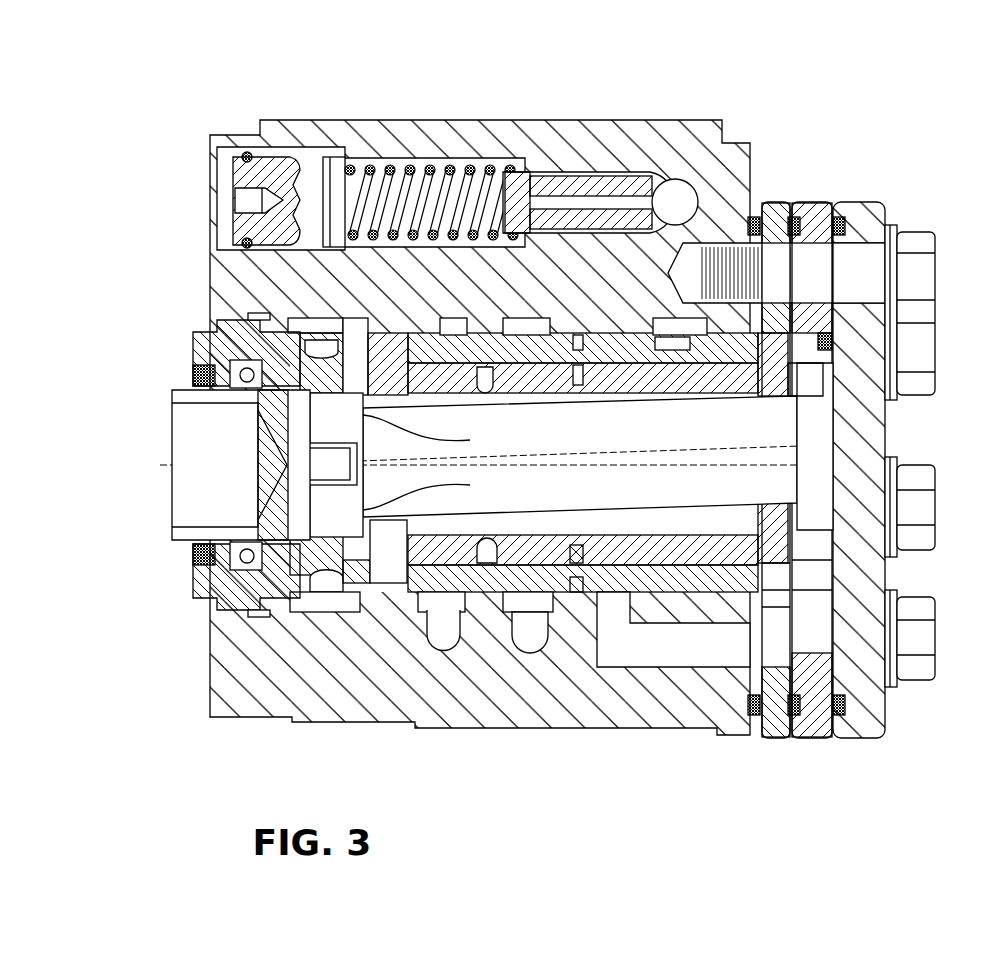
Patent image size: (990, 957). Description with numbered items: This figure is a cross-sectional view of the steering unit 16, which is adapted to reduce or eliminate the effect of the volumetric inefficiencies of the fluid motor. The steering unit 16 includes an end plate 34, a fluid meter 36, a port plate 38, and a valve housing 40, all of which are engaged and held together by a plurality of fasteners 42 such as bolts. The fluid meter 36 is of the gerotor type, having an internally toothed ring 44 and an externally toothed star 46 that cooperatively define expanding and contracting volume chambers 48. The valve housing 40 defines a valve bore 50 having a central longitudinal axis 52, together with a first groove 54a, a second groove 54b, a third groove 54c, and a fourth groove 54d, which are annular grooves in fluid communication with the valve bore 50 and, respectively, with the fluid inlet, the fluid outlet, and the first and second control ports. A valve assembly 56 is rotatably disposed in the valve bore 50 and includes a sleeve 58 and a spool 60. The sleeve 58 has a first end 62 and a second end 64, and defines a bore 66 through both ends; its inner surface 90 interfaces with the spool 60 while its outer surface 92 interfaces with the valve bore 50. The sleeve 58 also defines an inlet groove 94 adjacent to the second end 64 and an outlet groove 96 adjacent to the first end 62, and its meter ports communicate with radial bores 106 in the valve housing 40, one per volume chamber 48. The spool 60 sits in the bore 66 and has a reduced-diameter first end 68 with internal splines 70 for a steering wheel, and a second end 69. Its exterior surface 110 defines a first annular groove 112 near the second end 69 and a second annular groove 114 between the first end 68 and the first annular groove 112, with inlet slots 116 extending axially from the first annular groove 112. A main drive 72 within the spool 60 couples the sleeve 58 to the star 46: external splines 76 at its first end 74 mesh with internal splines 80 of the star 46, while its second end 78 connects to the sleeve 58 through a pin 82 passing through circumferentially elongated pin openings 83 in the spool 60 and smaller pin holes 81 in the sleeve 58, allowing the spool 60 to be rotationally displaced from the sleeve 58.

The steering unit 16 is at (182, 125).
The end plate 34 is at (862, 734).
The fluid meter 36 is at (809, 193).
The port plate 38 is at (770, 734).
The valve housing 40 is at (462, 114).
The fasteners 42 is at (912, 236).
The internally toothed ring 44 is at (810, 734).
The externally toothed star 46 is at (830, 350).
The volume chambers 48 is at (828, 645).
The valve bore 50 is at (500, 562).
The central longitudinal axis 52 is at (752, 466).
The first groove 54a is at (660, 320).
The second groove 54b is at (300, 313).
The third groove 54c is at (445, 318).
The fourth groove 54d is at (572, 320).
The valve assembly 56 is at (766, 332).
The sleeve 58 is at (568, 316).
The spool 60 is at (158, 372).
The first end 62 is at (330, 318).
The second end 64 is at (757, 372).
The bore 66 is at (552, 380).
The first end 68 is at (230, 553).
The second end 69 is at (745, 563).
The internal splines 70 is at (195, 517).
The main drive 72 is at (646, 441).
The first end 74 is at (830, 457).
The external splines 76 is at (845, 435).
The second end 78 is at (433, 618).
The internal splines 80 is at (822, 398).
The pin holes 81 is at (402, 336).
The pin 82 is at (377, 573).
The pin openings 83 is at (363, 401).
The inner surface 90 is at (655, 378).
The outer surface 92 is at (483, 325).
The inlet groove 94 is at (685, 332).
The outlet groove 96 is at (365, 597).
The radial bores 106 is at (613, 615).
The exterior surface 110 is at (560, 576).
The first annular groove 112 is at (655, 553).
The second annular groove 114 is at (583, 593).
The inlet slots 116 is at (632, 372).